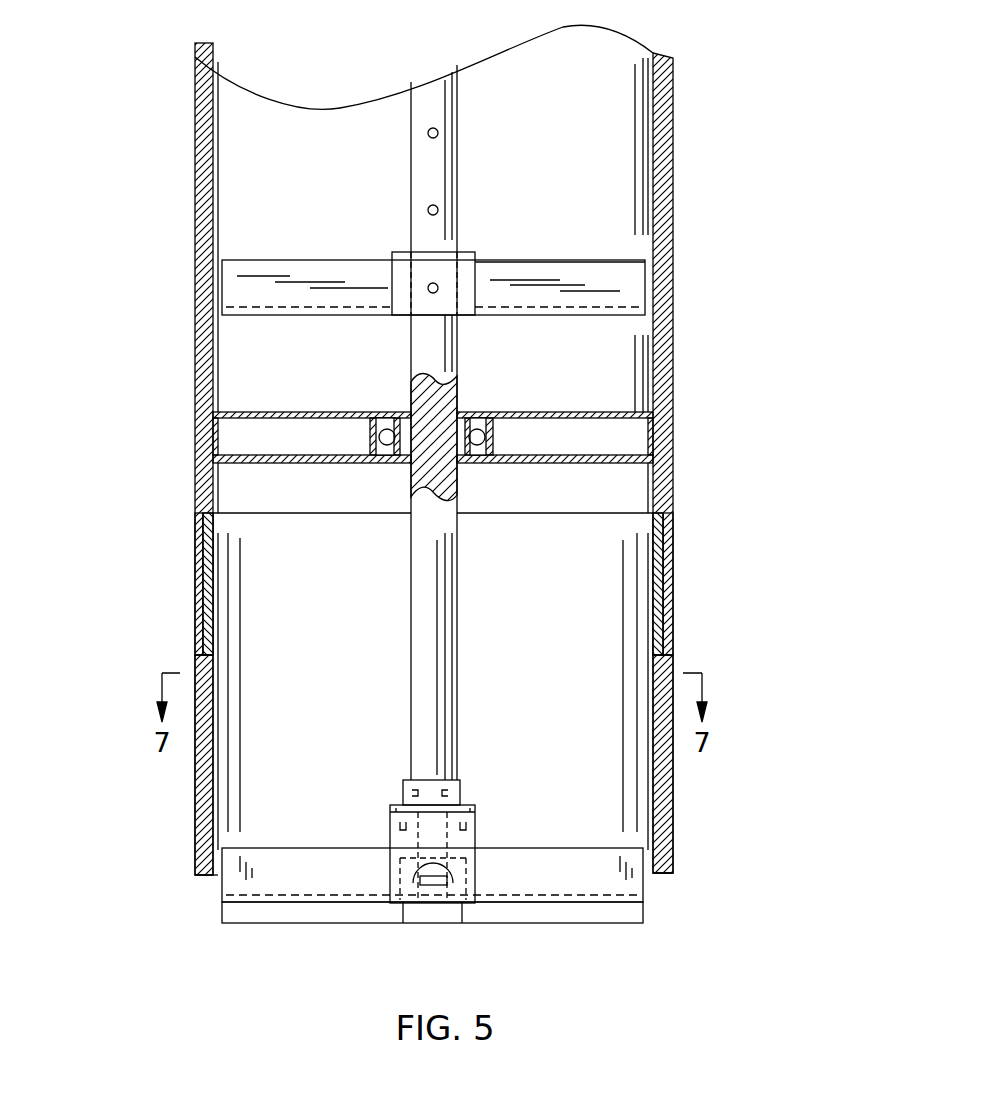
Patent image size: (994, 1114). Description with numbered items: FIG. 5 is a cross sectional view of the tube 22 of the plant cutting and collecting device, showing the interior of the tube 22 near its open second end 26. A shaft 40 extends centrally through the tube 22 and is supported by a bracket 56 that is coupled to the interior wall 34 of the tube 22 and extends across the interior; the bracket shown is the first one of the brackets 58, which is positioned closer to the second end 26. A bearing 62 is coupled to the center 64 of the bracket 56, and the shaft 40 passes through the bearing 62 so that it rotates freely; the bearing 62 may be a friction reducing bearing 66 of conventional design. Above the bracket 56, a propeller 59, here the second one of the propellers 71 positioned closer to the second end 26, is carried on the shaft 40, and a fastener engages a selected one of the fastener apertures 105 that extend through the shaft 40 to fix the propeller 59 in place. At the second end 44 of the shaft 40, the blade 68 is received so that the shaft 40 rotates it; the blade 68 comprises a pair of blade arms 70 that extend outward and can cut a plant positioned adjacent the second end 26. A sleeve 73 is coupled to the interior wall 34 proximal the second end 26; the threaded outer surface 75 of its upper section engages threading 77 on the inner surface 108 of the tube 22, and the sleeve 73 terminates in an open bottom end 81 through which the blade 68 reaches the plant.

The tube 22 is at (172, 362).
The second end of the tube 26 is at (195, 645).
The interior wall of the tube 34 is at (648, 168).
The shaft 40 is at (420, 592).
The second end of the shaft 44 is at (455, 850).
The bracket 56 is at (602, 407).
The first one of the brackets 58 is at (582, 465).
The propeller 59 is at (246, 253).
The bearing 62 is at (368, 428).
The center of the bracket 64 is at (480, 477).
The friction reducing bearing 66 is at (490, 402).
The blade 68 is at (265, 946).
The blade arms 70 is at (220, 888).
The second one of the propellers 71 is at (583, 260).
The sleeve 73 is at (673, 853).
The outer surface of the sleeve 75 is at (673, 603).
The threading 77 is at (195, 552).
The open bottom end of the sleeve 81 is at (195, 849).
The fastener apertures 105 is at (429, 206).
The inner surface of the tube 108 is at (220, 535).